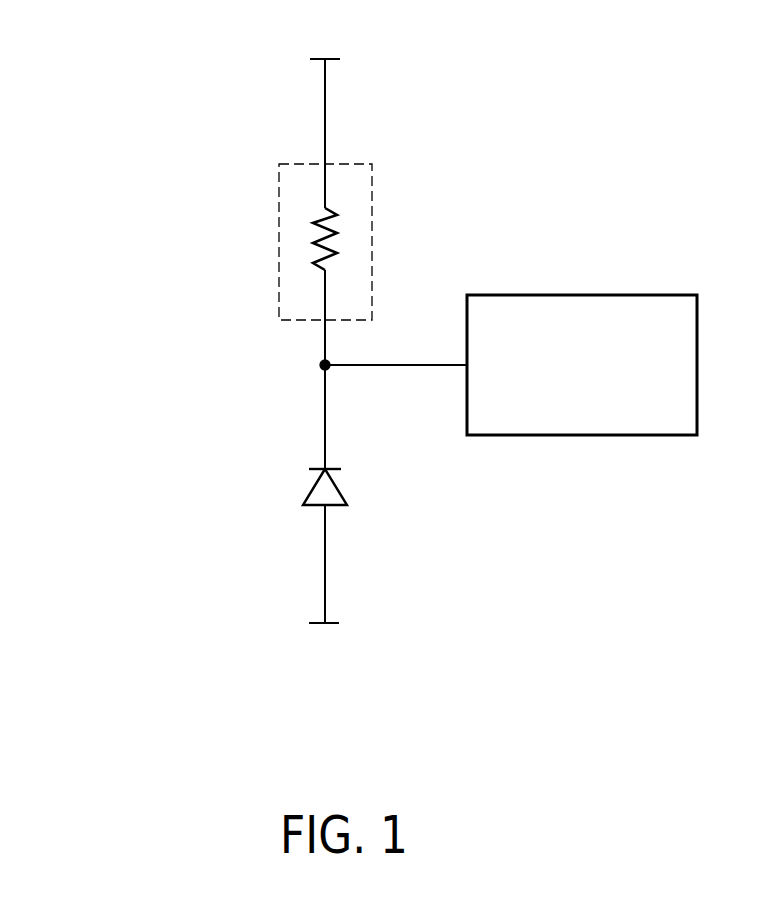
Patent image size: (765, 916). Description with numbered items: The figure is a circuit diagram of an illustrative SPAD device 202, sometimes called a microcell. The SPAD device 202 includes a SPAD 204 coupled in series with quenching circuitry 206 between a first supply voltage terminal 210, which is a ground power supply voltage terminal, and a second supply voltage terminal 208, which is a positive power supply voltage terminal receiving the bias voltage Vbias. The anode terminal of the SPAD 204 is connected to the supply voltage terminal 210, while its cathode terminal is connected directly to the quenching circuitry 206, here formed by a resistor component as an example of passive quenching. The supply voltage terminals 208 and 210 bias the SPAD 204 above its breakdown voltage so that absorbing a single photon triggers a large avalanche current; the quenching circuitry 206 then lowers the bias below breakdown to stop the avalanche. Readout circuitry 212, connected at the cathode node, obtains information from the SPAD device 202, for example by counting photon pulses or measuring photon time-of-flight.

The SPAD device 202 is at (160, 137).
The SPAD 204 is at (279, 492).
The quenching circuitry 206 is at (280, 240).
The second supply voltage terminal 208 is at (329, 58).
The first supply voltage terminal 210 is at (322, 624).
The readout circuitry 212 is at (613, 294).